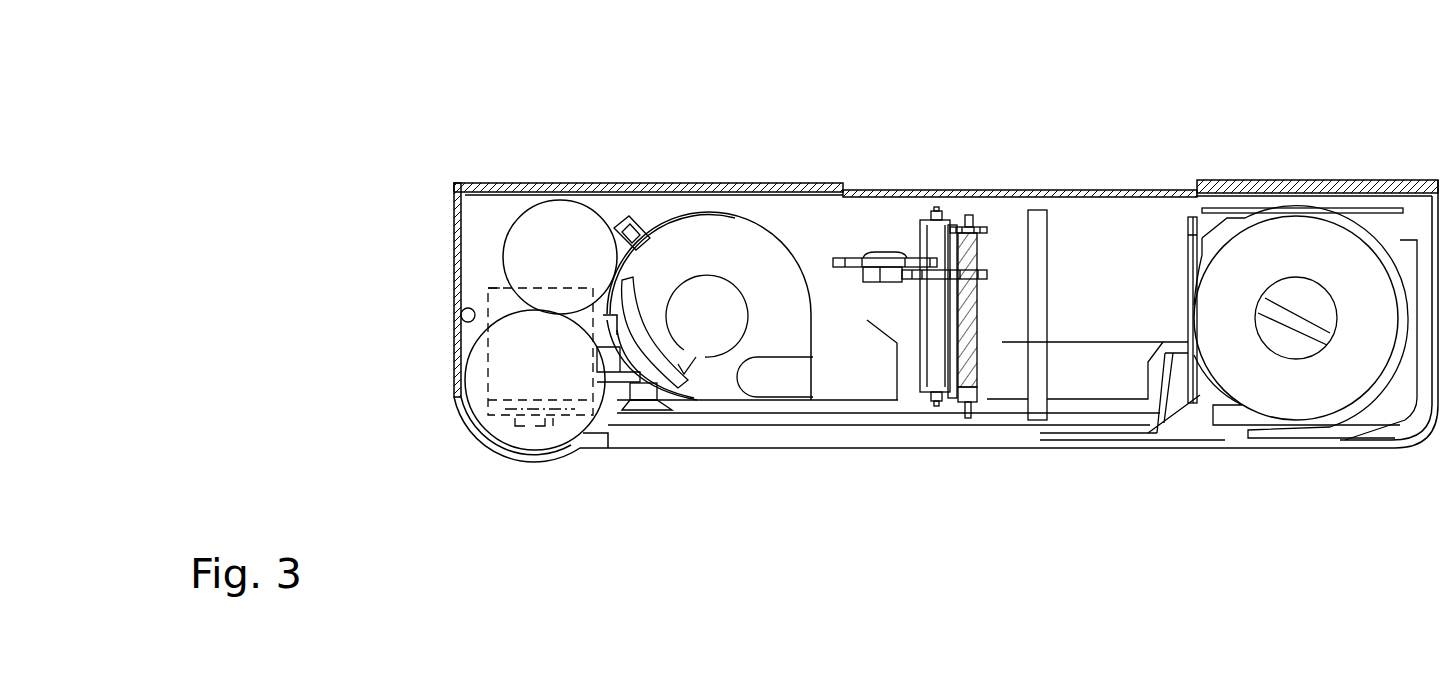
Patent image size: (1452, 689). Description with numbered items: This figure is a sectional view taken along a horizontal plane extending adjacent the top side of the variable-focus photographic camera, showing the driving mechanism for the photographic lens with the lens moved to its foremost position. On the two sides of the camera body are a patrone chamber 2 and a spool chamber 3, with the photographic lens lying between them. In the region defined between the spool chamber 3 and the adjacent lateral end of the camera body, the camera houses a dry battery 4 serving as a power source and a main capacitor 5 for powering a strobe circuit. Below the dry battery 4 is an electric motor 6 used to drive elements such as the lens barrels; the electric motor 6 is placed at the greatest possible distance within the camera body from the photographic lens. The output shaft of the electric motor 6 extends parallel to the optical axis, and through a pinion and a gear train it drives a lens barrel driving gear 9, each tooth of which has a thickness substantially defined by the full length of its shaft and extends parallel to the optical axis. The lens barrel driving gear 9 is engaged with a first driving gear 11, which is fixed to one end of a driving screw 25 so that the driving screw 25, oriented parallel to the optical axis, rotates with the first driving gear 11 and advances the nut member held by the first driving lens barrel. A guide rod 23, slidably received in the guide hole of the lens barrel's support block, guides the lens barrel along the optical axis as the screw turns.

The patrone chamber 2 is at (1327, 375).
The spool chamber 3 is at (722, 388).
The dry battery 4 is at (480, 405).
The main capacitor 5 is at (568, 212).
The electric motor 6 is at (499, 300).
The lens barrel driving gear 9 is at (933, 230).
The first driving gear 11 is at (988, 228).
The guide rod 23 is at (1038, 231).
The driving screw 25 is at (980, 390).